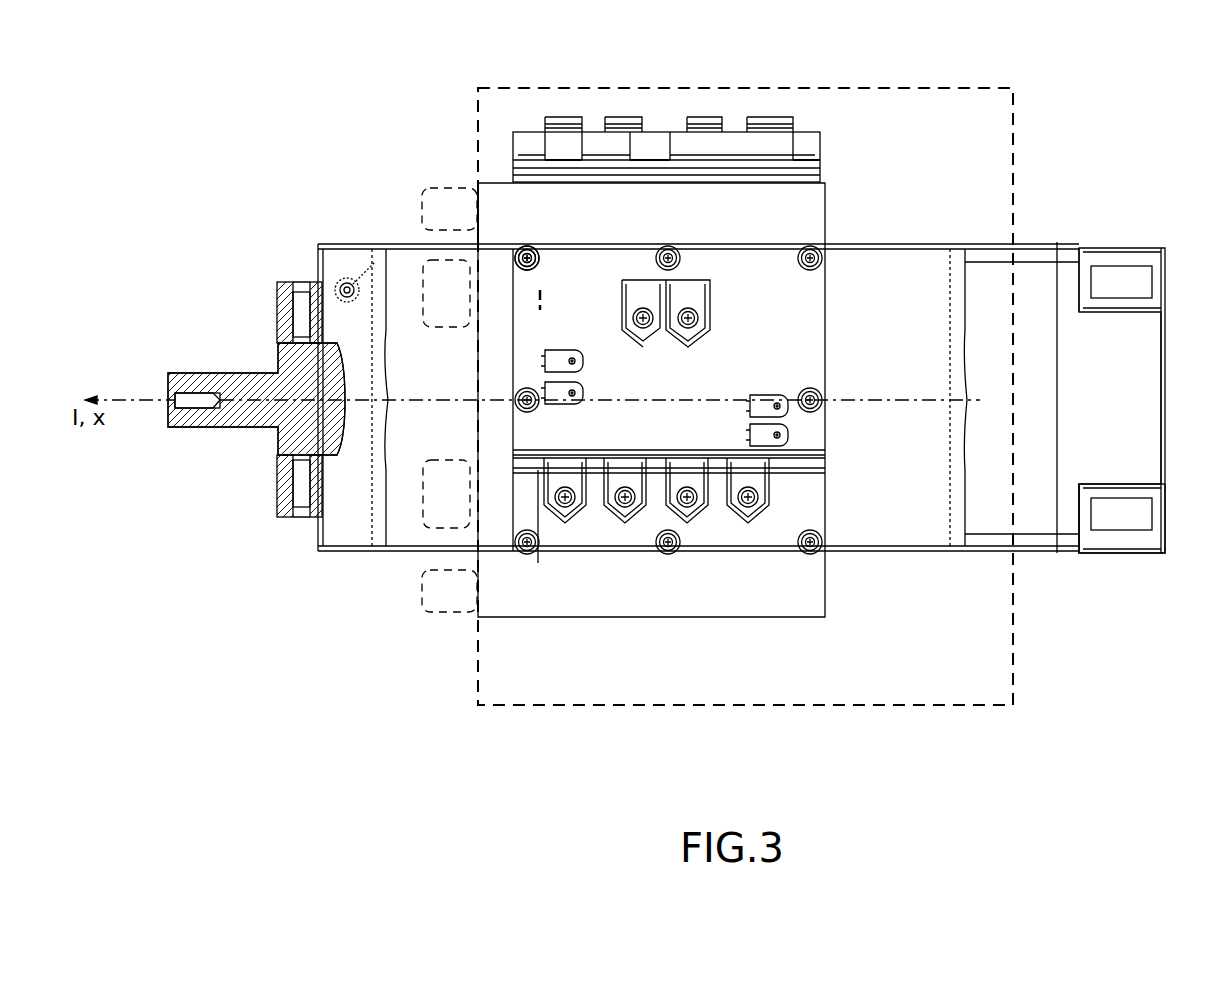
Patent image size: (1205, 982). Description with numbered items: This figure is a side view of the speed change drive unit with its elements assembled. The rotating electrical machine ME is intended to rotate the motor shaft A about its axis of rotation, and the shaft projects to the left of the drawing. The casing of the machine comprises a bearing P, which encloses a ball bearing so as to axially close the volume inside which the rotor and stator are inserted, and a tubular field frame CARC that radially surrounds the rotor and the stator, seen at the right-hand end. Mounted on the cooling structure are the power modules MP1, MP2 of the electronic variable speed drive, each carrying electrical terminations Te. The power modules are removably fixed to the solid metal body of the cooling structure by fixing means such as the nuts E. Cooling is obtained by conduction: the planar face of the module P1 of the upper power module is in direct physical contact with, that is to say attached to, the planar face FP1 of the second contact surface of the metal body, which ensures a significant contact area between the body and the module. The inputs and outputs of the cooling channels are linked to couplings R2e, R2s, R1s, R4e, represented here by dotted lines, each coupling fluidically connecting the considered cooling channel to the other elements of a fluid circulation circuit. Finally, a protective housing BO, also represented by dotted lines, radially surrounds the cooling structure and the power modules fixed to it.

The protective housing BO is at (537, 88).
The power module MP1 is at (668, 132).
The electrical terminations Te is at (690, 327).
The planar face FP1 is at (497, 180).
The nuts E is at (527, 248).
The planar face of the module P1 is at (800, 185).
The power module MP2 is at (790, 330).
The tubular field frame CARC is at (1055, 243).
The coupling R1s is at (422, 205).
The coupling R2e is at (423, 300).
The coupling R2s is at (423, 478).
The coupling R4e is at (422, 588).
The motor shaft A is at (197, 428).
The bearing P is at (348, 551).
The rotating electrical machine ME is at (1072, 553).